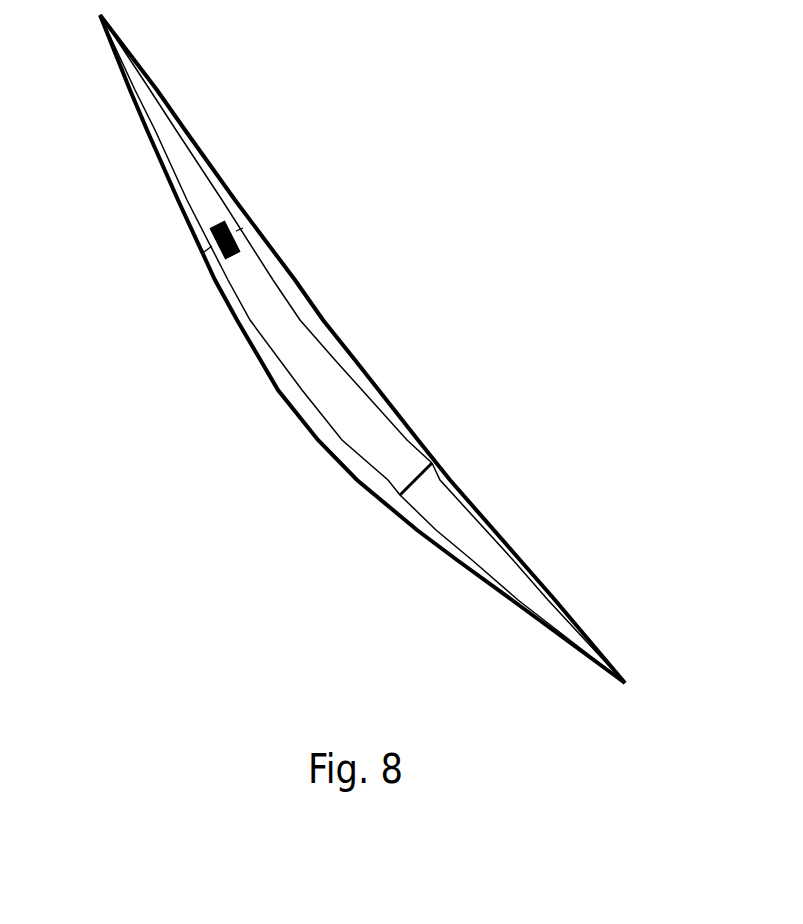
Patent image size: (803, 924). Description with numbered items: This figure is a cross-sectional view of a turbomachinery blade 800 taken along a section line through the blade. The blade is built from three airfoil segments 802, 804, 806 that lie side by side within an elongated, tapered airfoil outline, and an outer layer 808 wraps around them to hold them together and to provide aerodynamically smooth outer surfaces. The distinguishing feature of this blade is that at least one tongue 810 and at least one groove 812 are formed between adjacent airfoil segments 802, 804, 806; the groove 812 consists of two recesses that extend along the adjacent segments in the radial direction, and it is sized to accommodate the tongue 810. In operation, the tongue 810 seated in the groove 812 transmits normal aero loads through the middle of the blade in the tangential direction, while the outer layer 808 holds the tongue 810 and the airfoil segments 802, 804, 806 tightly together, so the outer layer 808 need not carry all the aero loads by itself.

The turbomachinery blade 800 is at (425, 235).
The airfoil segment 802 is at (173, 152).
The airfoil segment 804 is at (328, 407).
The airfoil segment 806 is at (505, 577).
The outer layer 808 is at (354, 478).
The tongue 810 is at (217, 250).
The groove 812 is at (210, 226).